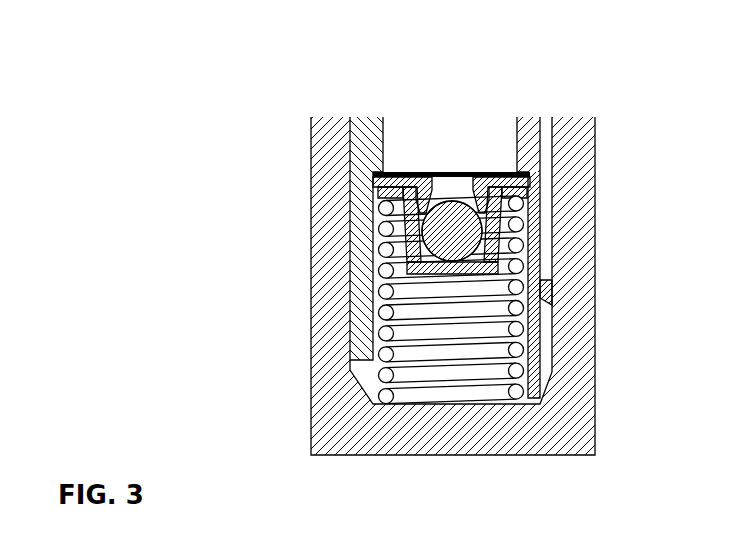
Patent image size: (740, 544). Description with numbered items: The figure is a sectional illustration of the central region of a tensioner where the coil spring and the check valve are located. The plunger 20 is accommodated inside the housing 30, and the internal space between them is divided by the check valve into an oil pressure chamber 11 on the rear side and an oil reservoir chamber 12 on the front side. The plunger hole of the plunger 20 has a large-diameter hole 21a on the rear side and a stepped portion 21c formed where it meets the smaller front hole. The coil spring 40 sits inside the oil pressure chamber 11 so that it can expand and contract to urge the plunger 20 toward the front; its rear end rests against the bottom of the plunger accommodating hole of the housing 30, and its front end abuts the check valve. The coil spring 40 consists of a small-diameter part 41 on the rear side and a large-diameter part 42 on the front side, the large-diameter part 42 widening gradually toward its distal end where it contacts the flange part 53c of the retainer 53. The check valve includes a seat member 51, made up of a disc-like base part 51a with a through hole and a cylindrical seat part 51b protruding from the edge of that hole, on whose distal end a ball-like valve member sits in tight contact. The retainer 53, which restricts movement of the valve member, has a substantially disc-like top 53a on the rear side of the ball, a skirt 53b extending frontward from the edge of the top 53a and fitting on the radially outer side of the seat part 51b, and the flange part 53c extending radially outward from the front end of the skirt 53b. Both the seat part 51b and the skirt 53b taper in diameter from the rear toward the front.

The oil pressure chamber 11 is at (437, 344).
The oil reservoir chamber 12 is at (437, 154).
The plunger 20 is at (525, 117).
The large-diameter hole 21a is at (363, 200).
The stepped portion 21c is at (378, 163).
The housing 30 is at (572, 117).
The coil spring 40 is at (544, 300).
The small-diameter part 41 is at (532, 320).
The large-diameter part 42 is at (530, 213).
The seat member 51 is at (554, 167).
The base part 51a is at (520, 170).
The seat part 51b is at (530, 187).
The retainer 53 is at (357, 252).
The top 53a is at (400, 272).
The skirt 53b is at (400, 232).
The flange part 53c is at (378, 205).